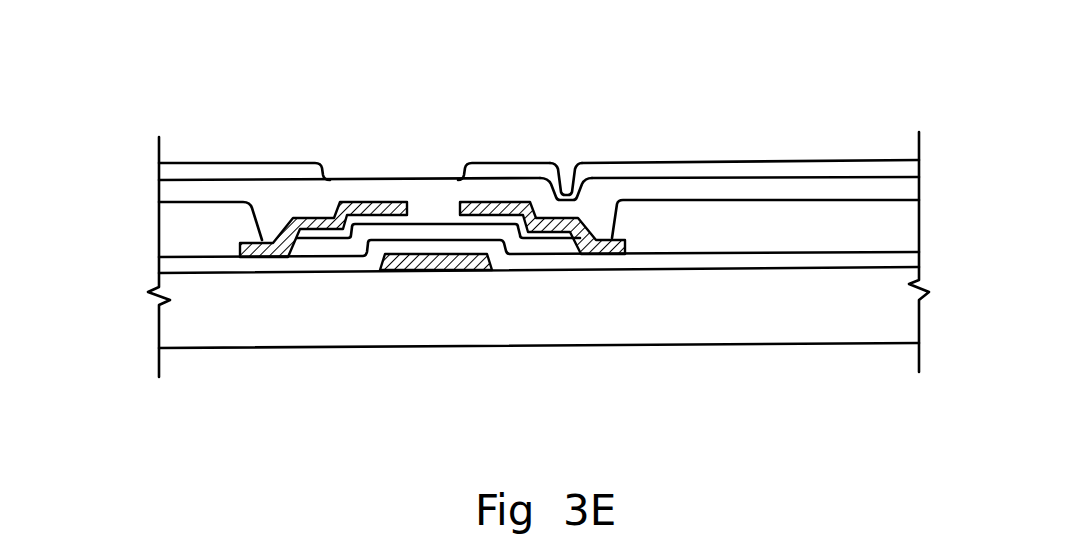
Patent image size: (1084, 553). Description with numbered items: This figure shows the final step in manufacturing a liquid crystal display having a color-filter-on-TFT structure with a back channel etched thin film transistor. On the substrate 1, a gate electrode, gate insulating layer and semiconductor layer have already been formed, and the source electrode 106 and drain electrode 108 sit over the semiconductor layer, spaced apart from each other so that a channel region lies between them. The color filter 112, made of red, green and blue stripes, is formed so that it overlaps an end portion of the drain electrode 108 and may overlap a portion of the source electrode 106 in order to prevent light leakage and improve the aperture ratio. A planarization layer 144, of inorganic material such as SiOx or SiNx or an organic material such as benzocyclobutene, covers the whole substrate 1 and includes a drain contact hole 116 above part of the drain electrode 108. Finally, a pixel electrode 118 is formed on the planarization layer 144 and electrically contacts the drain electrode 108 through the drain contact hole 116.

The substrate 1 is at (539, 307).
The source electrode 106 is at (372, 202).
The drain electrode 108 is at (606, 254).
The color filter 112 is at (780, 207).
The drain contact hole 116 is at (566, 192).
The pixel electrode 118 is at (675, 160).
The planarization layer 144 is at (440, 190).